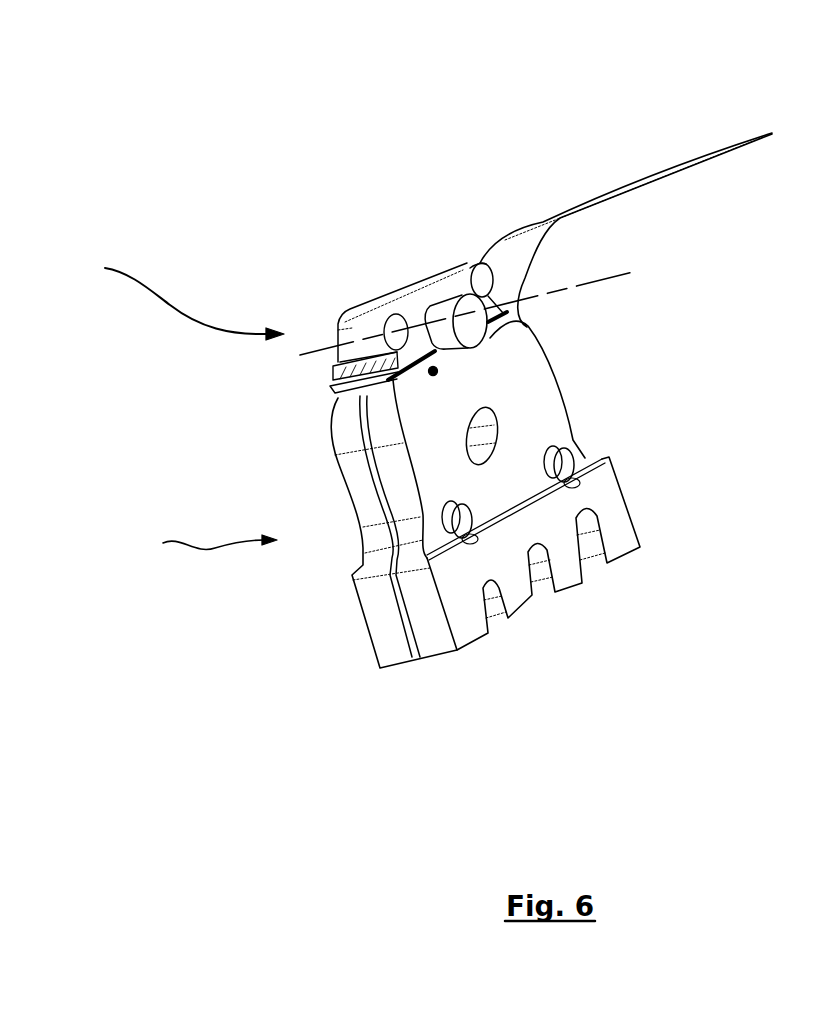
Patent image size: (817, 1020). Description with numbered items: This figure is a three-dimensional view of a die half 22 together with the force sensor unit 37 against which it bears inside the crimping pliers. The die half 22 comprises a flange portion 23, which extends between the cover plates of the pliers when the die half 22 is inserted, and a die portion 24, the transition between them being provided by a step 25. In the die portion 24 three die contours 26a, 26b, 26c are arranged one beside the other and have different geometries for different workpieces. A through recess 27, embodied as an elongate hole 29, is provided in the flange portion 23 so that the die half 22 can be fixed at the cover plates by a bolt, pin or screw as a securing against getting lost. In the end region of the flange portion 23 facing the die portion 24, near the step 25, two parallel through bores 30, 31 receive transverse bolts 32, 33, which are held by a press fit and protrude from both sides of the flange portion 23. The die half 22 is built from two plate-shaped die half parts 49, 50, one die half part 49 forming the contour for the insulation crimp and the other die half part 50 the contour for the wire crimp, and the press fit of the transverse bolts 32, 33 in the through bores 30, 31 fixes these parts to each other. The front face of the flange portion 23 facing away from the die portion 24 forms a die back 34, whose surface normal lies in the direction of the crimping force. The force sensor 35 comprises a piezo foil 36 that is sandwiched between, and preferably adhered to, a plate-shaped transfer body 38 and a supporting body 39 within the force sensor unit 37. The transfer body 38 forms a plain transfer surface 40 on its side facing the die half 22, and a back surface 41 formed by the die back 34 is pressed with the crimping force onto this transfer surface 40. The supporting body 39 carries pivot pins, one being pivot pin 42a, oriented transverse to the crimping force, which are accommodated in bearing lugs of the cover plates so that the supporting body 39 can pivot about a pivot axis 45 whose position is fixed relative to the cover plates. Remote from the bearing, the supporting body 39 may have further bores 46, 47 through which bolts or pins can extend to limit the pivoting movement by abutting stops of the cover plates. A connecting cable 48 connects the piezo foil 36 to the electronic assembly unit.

The die half 22 is at (200, 544).
The flange portion 23 is at (530, 374).
The die portion 24 is at (610, 497).
The step 25 is at (615, 457).
The die contour 26a is at (487, 592).
The die contour 26b is at (538, 567).
The die contour 26c is at (585, 528).
The through recess 27 is at (449, 436).
The elongate hole 29 is at (467, 447).
The through bore 30 is at (446, 502).
The through bore 31 is at (540, 463).
The transverse bolt 32 is at (466, 520).
The transverse bolt 33 is at (572, 462).
The die back 34 is at (436, 279).
The force sensor 35 is at (259, 394).
The piezo foil 36 is at (333, 392).
The force sensor unit 37 is at (177, 297).
The transfer body 38 is at (337, 384).
The supporting body 39 is at (357, 328).
The transfer surface 40 is at (437, 373).
The back surface 41 is at (432, 370).
The pivot pin 42a is at (465, 302).
The pivot axis 45 is at (622, 270).
The bore 46 is at (392, 312).
The bore 47 is at (482, 263).
The connecting cable 48 is at (693, 165).
The die half part 49 is at (387, 643).
The die half part 50 is at (440, 642).